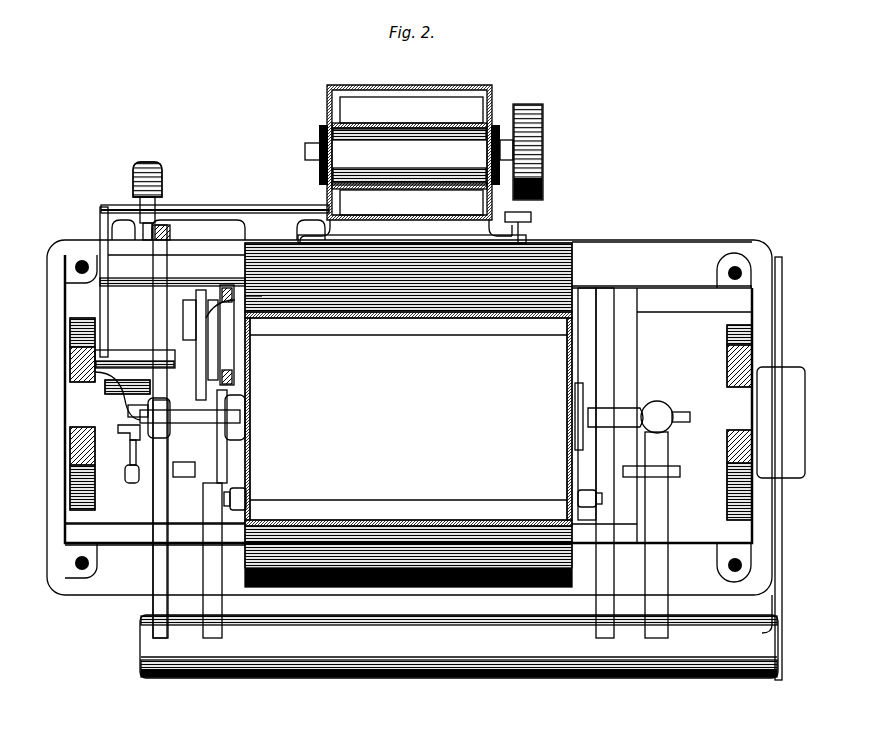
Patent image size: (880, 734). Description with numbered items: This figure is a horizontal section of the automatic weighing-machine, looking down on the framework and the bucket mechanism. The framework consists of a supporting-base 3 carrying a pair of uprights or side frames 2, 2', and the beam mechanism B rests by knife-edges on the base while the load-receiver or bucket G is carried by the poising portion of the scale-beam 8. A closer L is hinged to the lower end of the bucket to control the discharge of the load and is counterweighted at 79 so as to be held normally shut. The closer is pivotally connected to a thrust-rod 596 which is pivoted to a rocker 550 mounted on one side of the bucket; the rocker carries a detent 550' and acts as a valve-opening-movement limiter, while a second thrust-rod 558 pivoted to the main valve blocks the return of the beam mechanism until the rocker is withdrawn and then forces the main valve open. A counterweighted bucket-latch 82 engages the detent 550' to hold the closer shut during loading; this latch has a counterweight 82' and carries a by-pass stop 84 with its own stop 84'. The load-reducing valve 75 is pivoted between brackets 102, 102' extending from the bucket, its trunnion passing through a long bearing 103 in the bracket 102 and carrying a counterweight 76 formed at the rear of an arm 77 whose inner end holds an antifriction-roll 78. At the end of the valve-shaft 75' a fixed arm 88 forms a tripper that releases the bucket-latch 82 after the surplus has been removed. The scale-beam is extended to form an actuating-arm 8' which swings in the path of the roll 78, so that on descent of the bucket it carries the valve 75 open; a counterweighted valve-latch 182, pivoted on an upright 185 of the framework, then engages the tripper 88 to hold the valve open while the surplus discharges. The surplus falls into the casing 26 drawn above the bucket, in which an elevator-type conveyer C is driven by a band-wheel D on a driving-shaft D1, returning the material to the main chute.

The upright or side frame 2 is at (412, 460).
The supporting-base 3 is at (662, 264).
The upright or side frame 2' is at (717, 422).
The beam mechanism B is at (459, 646).
The scale-beam 8 is at (155, 552).
The counterweight 79 is at (212, 590).
The actuating-arm 8' is at (120, 427).
The valve-shaft 75' is at (83, 274).
The long bearing 103 is at (218, 206).
The arm or bracket 102 is at (304, 209).
The antifriction-roll 78 is at (173, 218).
The counterweight 76 is at (161, 170).
The arm 77 is at (147, 232).
The ribbon spool casing 26 is at (416, 78).
The conveyer C is at (409, 155).
The driving-shaft D1 is at (310, 147).
The band-wheel D is at (539, 133).
The arm or bracket 102' is at (547, 224).
The load-reducing valve 75 is at (412, 214).
The load-receiver or bucket G is at (408, 415).
The thrust-rod 596 is at (268, 299).
The tripper 88 is at (72, 328).
The valve-latch 182 is at (70, 358).
The upright 185 is at (72, 387).
The thrust-rod 558 is at (191, 292).
The rocker 550 is at (252, 335).
The detent 550' is at (258, 336).
The bucket-latch 82 is at (162, 427).
The counterweight 82' is at (121, 417).
The stop 84' is at (118, 445).
The by-pass stop 84 is at (117, 465).
The closer L is at (588, 360).